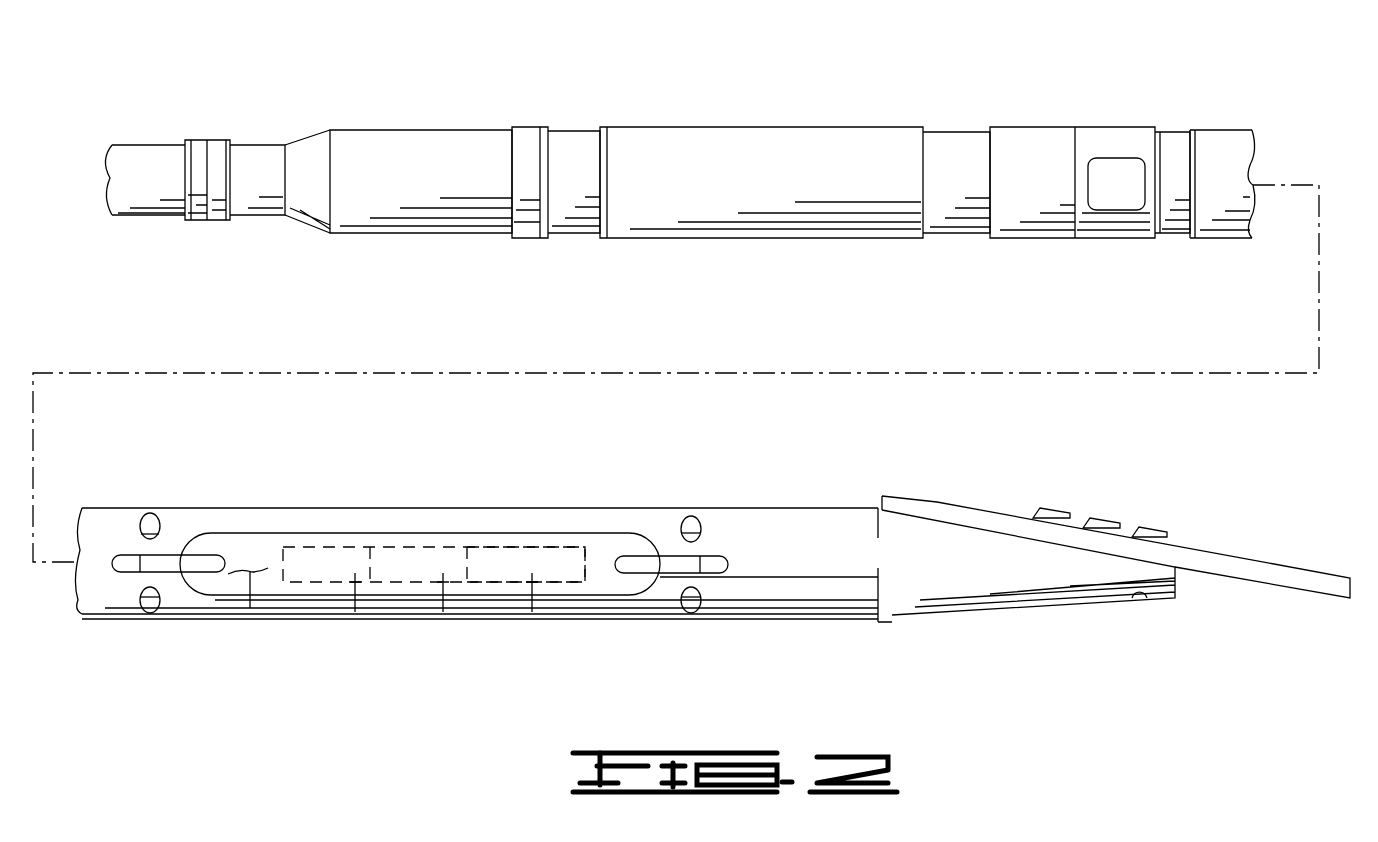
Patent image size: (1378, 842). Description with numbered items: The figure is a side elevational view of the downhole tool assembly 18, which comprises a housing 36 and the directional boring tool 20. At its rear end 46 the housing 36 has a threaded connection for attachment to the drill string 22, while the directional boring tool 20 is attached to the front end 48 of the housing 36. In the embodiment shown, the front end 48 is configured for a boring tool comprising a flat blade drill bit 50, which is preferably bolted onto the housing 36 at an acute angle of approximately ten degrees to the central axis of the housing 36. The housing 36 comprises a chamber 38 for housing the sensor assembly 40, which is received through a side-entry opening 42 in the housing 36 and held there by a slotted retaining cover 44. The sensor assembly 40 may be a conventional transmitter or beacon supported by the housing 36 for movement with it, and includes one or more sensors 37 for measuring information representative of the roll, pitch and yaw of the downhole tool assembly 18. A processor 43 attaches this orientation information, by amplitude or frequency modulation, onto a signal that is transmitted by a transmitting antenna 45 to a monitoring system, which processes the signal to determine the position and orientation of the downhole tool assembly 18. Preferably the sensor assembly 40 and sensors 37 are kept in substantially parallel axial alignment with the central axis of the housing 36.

The downhole tool assembly 18 is at (752, 84).
The drill string 22 is at (148, 218).
The rear end 46 is at (1175, 237).
The housing 36 is at (315, 508).
The side-entry opening 42 is at (458, 533).
The slotted retaining cover 44 is at (710, 556).
The chamber 38 is at (268, 643).
The sensors 37 is at (372, 642).
The processor 43 is at (460, 642).
The transmitting antenna 45 is at (549, 642).
The sensor assembly 40 is at (588, 572).
The front end 48 is at (910, 620).
The directional boring tool 20 is at (1298, 594).
The flat blade drill bit 50 is at (1273, 563).